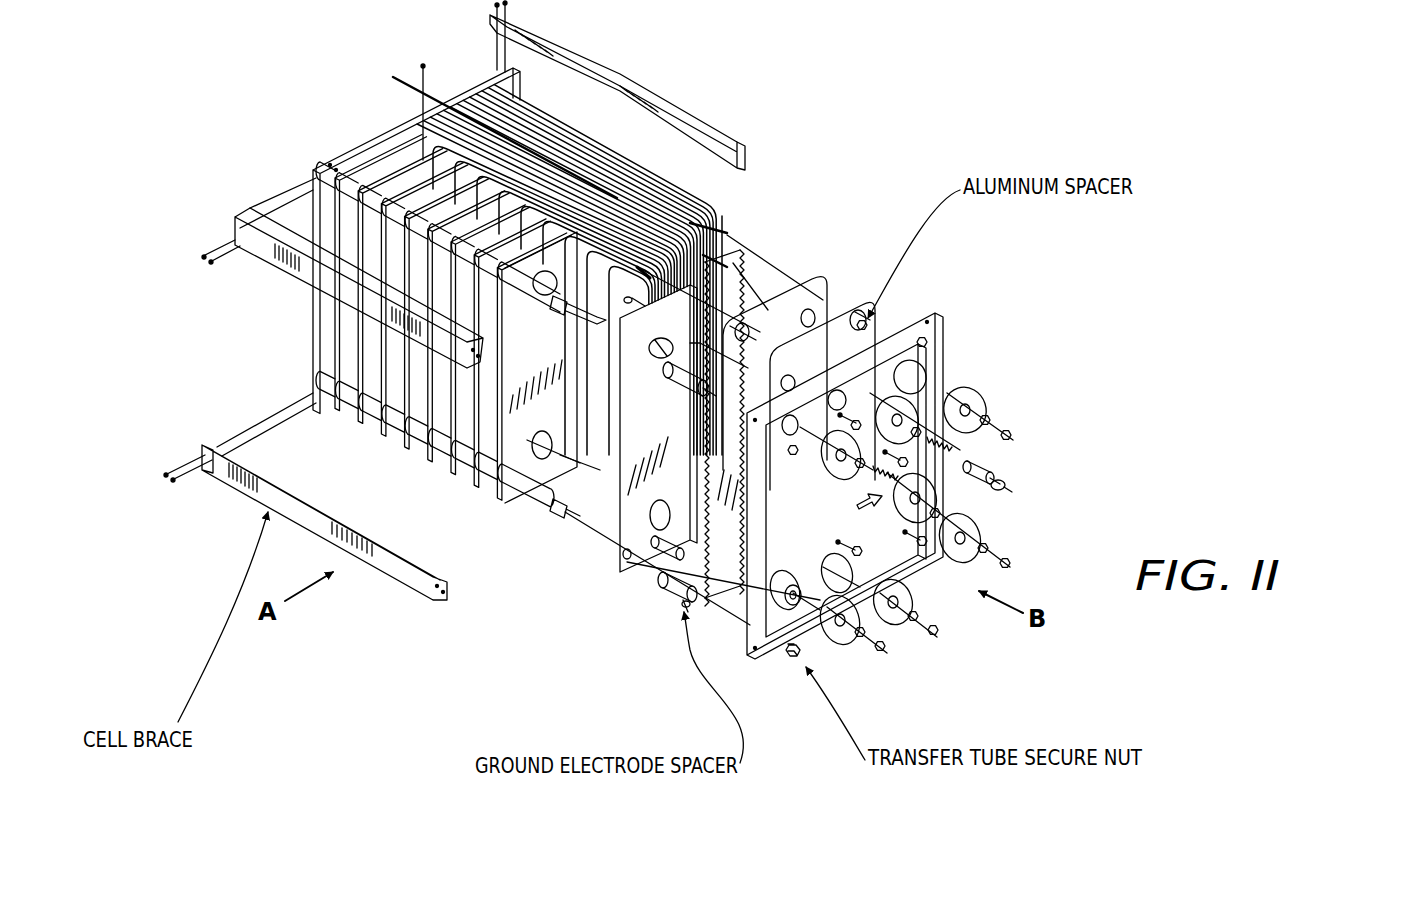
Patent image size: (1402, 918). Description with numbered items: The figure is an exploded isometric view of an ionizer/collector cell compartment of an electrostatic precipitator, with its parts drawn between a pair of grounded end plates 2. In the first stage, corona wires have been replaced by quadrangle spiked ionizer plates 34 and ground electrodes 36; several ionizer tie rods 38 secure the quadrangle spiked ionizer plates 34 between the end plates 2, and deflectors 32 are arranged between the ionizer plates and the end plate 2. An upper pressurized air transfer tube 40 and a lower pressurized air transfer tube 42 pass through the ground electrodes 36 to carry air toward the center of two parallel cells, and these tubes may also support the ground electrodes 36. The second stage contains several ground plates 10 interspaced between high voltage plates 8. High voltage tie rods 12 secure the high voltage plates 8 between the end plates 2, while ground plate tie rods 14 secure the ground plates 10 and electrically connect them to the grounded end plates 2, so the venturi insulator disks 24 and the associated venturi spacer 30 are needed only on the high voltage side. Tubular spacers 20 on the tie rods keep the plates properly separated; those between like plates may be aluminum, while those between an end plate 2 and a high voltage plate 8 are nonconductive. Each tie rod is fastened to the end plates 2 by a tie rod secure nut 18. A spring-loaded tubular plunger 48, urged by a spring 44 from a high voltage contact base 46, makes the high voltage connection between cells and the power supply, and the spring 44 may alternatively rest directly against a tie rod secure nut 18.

The end plate 2 is at (400, 91).
The high voltage plate 8 is at (882, 305).
The ground plate 10 is at (830, 275).
The high voltage tie rod 12 is at (726, 229).
The ground plate tie rod 14 is at (727, 264).
The tie rod secure nut 18 is at (928, 338).
The tubular spacer 20 is at (984, 404).
The venturi insulator disk 24 is at (950, 442).
The venturi spacer 30 is at (988, 408).
The deflector 32 is at (799, 613).
The quadrangle spiked ionizer plate 34 is at (722, 568).
The ground electrode 36 is at (634, 570).
The ionizer tie rod 38 is at (559, 472).
The upper pressurized air transfer tube 40 is at (594, 329).
The lower pressurized air transfer tube 42 is at (577, 522).
The spring 44 is at (962, 447).
The high voltage contact base 46 is at (1004, 493).
The tubular plunger 48 is at (985, 484).